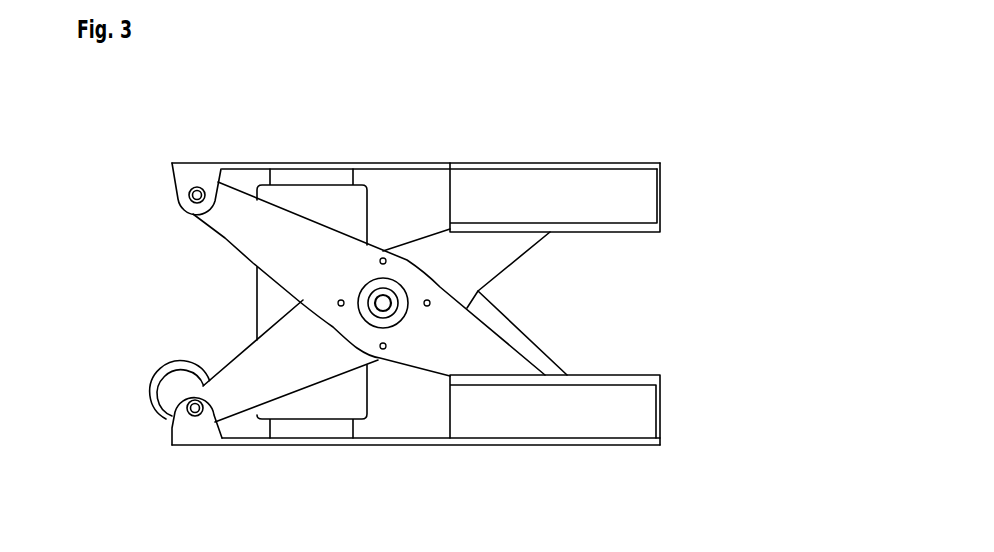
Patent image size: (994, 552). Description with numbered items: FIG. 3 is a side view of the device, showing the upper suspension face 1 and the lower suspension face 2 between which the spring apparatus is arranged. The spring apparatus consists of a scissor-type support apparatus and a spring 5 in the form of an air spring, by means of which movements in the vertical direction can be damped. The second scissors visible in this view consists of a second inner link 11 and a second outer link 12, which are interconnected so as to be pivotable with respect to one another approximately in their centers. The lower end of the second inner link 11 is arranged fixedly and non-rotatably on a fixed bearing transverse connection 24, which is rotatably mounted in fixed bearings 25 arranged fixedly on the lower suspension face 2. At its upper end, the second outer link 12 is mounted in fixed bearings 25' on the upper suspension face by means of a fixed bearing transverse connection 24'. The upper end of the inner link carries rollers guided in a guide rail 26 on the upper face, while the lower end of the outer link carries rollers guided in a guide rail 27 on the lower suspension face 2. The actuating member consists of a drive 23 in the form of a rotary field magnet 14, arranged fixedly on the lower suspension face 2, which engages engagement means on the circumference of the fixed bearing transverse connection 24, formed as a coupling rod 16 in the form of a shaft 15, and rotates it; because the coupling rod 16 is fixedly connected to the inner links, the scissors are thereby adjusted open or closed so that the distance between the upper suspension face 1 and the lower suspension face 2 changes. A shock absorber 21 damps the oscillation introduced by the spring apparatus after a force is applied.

The upper suspension face 1 is at (422, 162).
The lower suspension face 2 is at (367, 445).
The spring 5 is at (256, 294).
The second inner link 11 is at (237, 368).
The second outer link 12 is at (227, 233).
The rotary field magnet 14 is at (173, 382).
The shaft 15 is at (120, 417).
The coupling rod 16 is at (187, 409).
The shock absorber 21 is at (515, 328).
The drive 23 is at (146, 373).
The fixed bearing transverse connection 24 is at (120, 417).
The fixed bearing transverse connection 24' is at (240, 153).
The fixed bearings 25 is at (177, 448).
The fixed bearings 25' is at (162, 182).
The guide rail 26 is at (577, 188).
The guide rail 27 is at (598, 425).